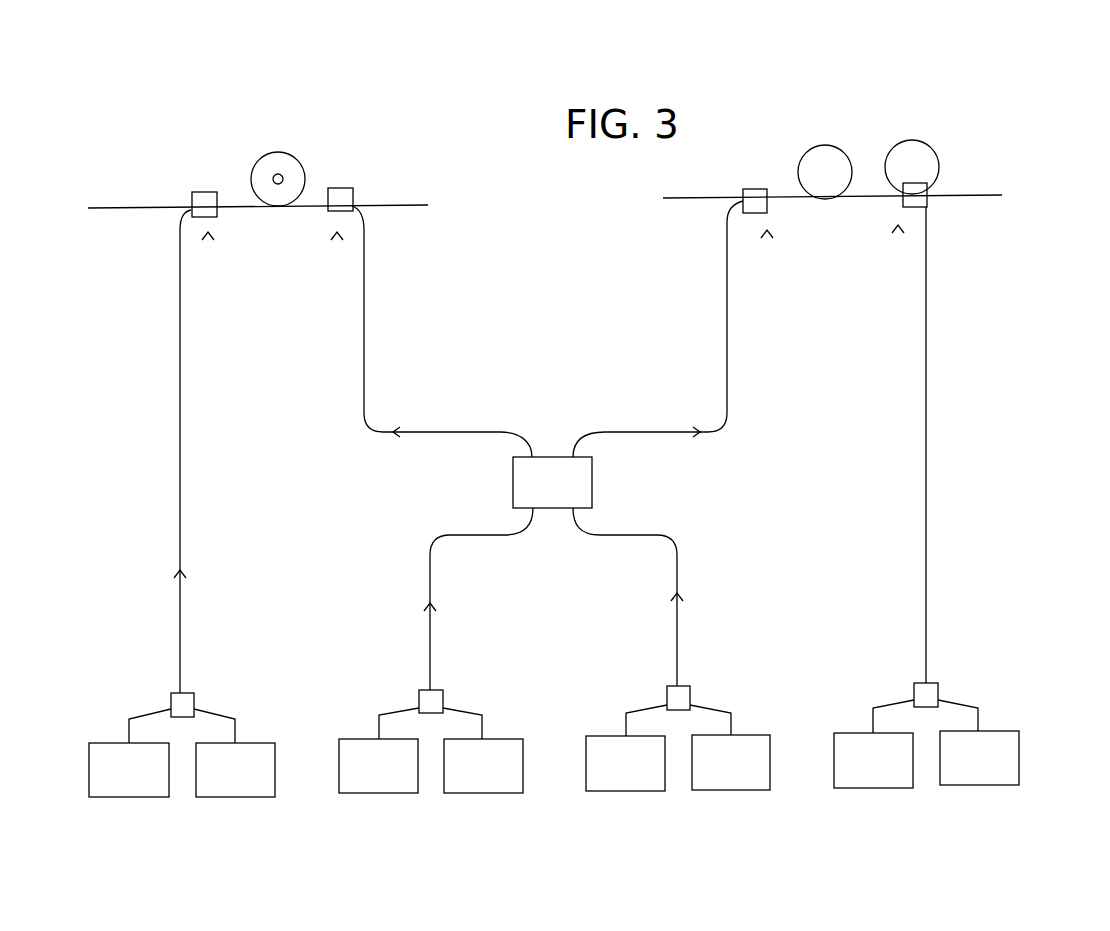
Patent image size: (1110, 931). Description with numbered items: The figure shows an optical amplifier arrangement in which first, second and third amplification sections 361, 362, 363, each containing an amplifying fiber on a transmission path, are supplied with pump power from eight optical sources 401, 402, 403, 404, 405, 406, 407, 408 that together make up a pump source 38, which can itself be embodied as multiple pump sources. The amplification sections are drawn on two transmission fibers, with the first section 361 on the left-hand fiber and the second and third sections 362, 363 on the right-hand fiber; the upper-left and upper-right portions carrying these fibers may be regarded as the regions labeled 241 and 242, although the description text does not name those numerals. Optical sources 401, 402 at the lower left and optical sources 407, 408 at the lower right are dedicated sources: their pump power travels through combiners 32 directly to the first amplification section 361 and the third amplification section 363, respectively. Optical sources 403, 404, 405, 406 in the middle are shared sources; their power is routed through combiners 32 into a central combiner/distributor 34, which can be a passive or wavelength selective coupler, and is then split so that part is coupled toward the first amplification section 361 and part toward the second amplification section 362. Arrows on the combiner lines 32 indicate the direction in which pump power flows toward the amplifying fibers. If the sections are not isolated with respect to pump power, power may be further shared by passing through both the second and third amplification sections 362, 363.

The first printing unit 241 is at (200, 110).
The second printing unit 242 is at (903, 78).
The first amplification section 361 is at (305, 177).
The second amplification section 362 is at (826, 146).
The third amplification section 363 is at (923, 152).
The combiner 32 is at (337, 236).
The combiner/distributor 34 is at (592, 478).
The pump source 38 is at (1027, 710).
The optical source 401 is at (100, 797).
The optical source 402 is at (240, 797).
The optical source 403 is at (380, 795).
The optical source 404 is at (487, 793).
The optical source 405 is at (625, 793).
The optical source 406 is at (730, 790).
The optical source 407 is at (872, 788).
The optical source 408 is at (980, 785).